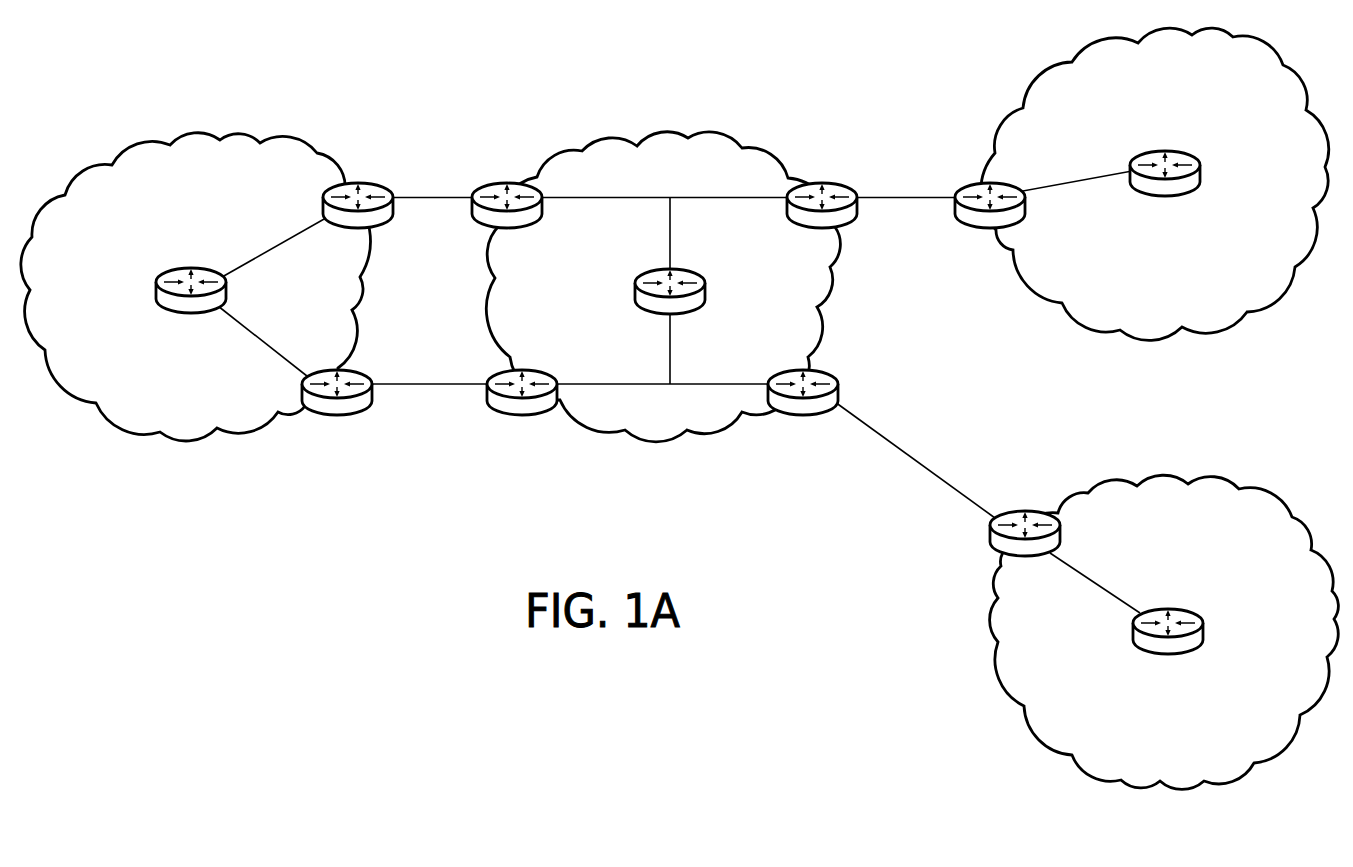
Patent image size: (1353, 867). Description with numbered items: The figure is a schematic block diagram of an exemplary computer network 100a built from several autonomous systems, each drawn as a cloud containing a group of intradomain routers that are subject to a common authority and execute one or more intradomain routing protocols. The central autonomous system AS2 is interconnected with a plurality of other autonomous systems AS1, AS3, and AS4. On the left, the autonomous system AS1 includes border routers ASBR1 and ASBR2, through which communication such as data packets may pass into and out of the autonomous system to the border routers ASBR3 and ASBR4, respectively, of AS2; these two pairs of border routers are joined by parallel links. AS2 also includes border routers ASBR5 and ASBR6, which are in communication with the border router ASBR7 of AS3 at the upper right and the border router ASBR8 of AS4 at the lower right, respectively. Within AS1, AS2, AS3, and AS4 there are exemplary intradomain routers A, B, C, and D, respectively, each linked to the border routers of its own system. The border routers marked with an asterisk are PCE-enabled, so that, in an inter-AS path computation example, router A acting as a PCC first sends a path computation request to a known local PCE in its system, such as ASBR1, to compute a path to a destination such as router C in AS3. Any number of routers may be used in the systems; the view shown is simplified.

The computer network 100a is at (680, 408).
The intradomain router A is at (170, 295).
The intradomain router B is at (690, 290).
The intradomain router C is at (1184, 174).
The intradomain router D is at (1180, 647).
The border router ASBR1 is at (370, 172).
The border router ASBR2 is at (324, 418).
The border router ASBR3 is at (506, 173).
The border router ASBR4 is at (517, 418).
The border router ASBR5 is at (833, 173).
The border router ASBR6 is at (812, 418).
The border router ASBR7 is at (966, 230).
The border router ASBR8 is at (977, 550).
The autonomous system AS1 is at (196, 287).
The autonomous system AS2 is at (663, 287).
The autonomous system AS3 is at (1155, 184).
The autonomous system AS4 is at (1164, 632).